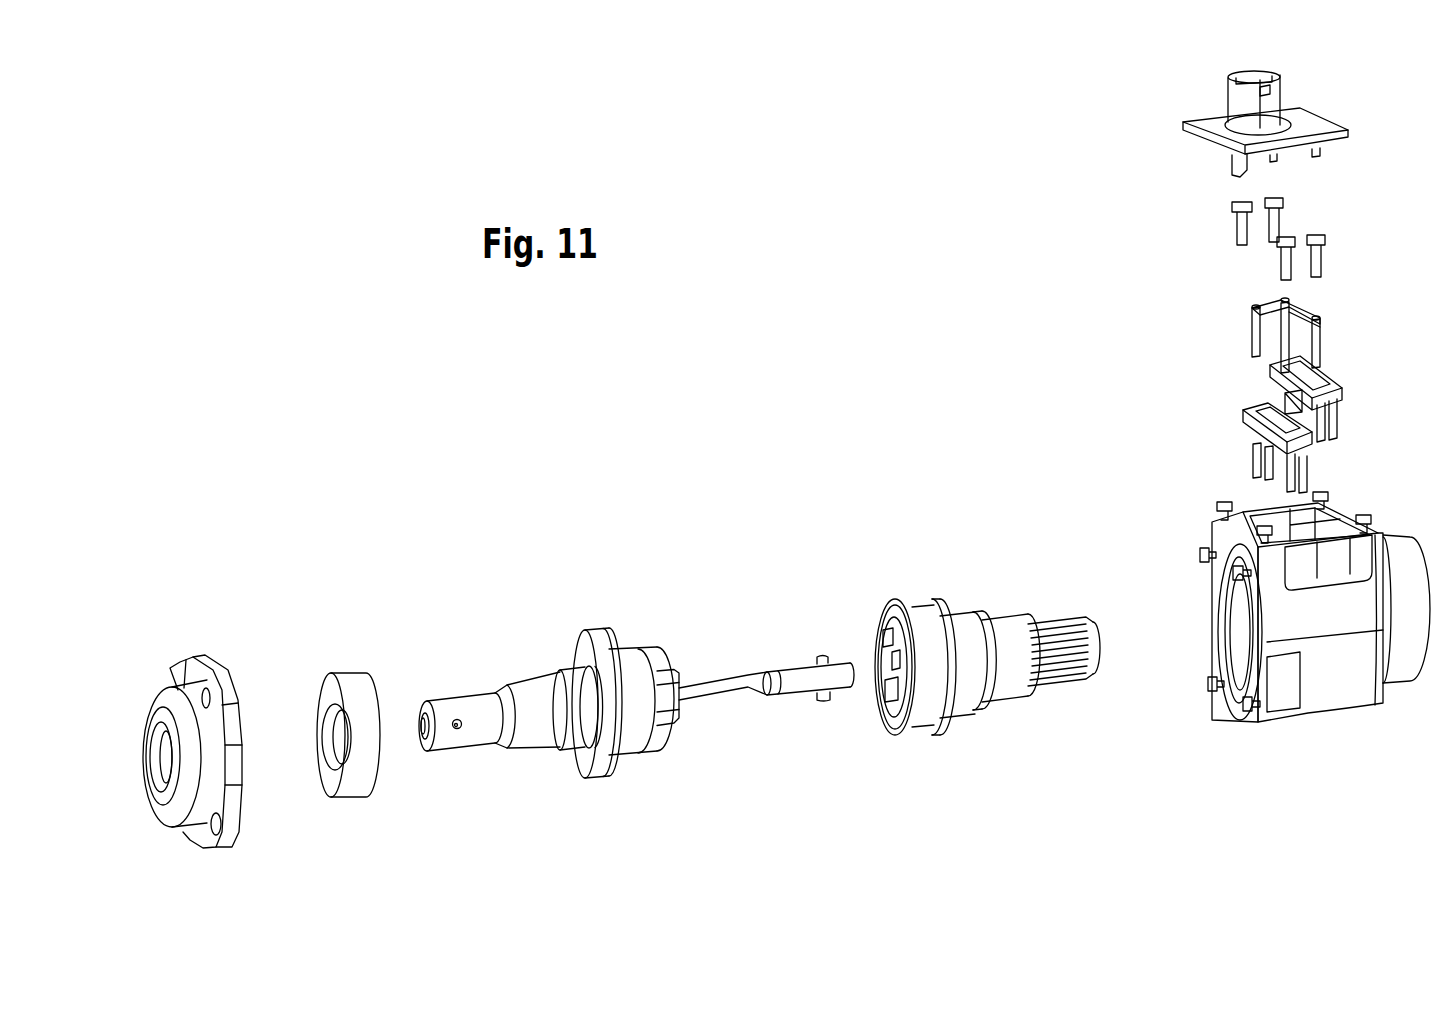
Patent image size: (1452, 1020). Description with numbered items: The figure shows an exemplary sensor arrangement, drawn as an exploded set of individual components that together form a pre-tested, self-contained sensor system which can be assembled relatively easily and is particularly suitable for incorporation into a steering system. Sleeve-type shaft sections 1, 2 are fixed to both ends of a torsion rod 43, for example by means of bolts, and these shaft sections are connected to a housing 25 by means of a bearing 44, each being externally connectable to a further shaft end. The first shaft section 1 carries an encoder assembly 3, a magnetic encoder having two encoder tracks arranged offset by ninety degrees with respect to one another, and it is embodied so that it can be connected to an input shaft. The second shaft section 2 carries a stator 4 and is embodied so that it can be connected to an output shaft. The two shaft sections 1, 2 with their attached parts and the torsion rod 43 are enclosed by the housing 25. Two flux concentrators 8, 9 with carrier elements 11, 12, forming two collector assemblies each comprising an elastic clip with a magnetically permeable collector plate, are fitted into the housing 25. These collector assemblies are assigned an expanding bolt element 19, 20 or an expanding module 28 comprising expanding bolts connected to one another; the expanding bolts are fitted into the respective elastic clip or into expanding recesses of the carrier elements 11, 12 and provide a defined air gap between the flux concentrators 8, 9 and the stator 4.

The first shaft section 1 is at (480, 732).
The second shaft section 2 is at (1008, 672).
The encoder assembly 3 is at (630, 765).
The stator 4 is at (934, 737).
The flux concentrator 8 is at (1257, 445).
The flux concentrator 9 is at (1285, 398).
The carrier element 11 is at (1311, 461).
The carrier element 12 is at (1340, 415).
The expanding bolt element 19 is at (1288, 368).
The expanding bolt element 20 is at (1318, 358).
The housing 25 is at (1328, 717).
The expanding module 28 is at (1265, 302).
The torsion rod 43 is at (785, 662).
The bearing 44 is at (336, 672).